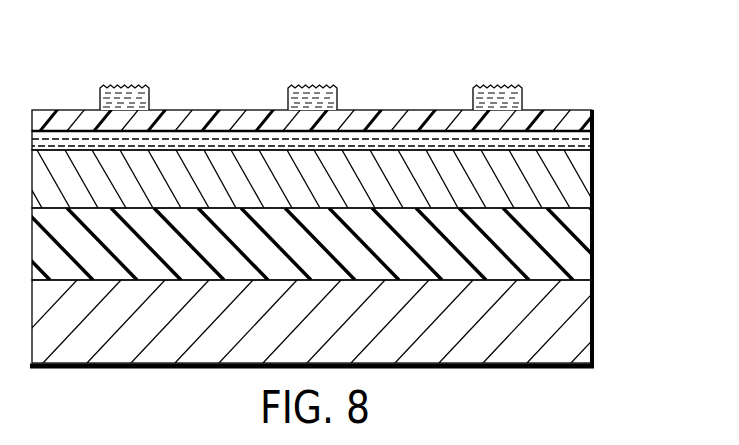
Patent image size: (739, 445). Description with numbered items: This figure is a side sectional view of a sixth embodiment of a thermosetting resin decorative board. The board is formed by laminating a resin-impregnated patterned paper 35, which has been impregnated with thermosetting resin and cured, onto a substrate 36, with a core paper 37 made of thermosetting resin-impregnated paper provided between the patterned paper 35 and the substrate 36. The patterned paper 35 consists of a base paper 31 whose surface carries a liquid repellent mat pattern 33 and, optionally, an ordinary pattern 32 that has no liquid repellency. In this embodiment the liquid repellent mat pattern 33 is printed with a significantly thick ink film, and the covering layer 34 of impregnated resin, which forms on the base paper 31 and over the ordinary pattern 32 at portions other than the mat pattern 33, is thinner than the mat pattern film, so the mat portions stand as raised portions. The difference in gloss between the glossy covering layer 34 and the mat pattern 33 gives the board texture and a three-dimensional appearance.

The base paper 31 is at (322, 179).
The ordinary pattern 32 is at (583, 138).
The liquid repellent mat pattern 33 is at (514, 91).
The covering layer of impregnated resin 34 is at (580, 120).
The resin-impregnated patterned paper 35 is at (345, 137).
The substrate 36 is at (583, 314).
The core paper 37 is at (583, 238).